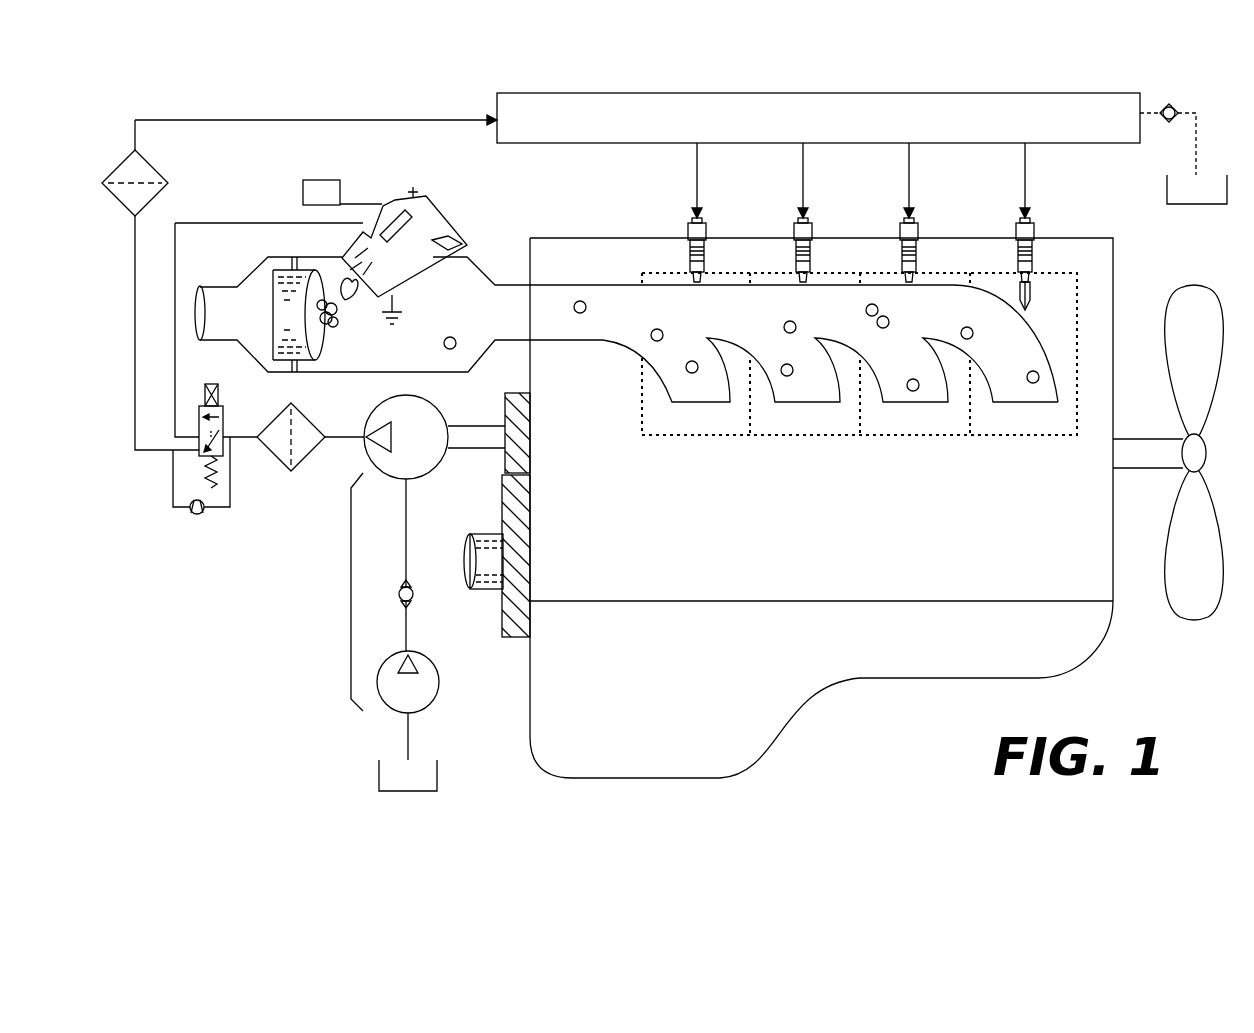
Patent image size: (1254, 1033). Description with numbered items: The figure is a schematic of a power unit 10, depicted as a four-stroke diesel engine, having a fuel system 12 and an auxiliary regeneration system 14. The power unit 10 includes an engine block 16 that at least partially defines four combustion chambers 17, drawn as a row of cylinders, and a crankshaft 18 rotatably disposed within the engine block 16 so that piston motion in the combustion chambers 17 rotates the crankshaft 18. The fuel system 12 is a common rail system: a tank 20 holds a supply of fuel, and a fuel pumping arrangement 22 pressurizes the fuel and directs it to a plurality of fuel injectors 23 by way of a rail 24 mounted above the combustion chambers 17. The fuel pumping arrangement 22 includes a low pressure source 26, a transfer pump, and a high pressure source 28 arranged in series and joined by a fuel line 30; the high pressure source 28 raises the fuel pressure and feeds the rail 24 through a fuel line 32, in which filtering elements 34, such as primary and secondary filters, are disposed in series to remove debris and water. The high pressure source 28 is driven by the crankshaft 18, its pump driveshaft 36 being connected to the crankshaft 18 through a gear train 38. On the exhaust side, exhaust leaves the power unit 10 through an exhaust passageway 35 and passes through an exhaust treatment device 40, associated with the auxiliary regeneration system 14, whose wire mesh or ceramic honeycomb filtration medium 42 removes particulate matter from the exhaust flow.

The power unit 10 is at (765, 43).
The fuel system 12 is at (383, 93).
The auxiliary regeneration system 14 is at (471, 203).
The engine block 16 is at (816, 495).
The combustion chambers 17 is at (692, 436).
The crankshaft 18 is at (492, 590).
The tank 20 is at (379, 763).
The fuel pumping arrangement 22 is at (350, 590).
The fuel injectors 23 is at (788, 234).
The rail 24 is at (810, 129).
The low pressure source 26 is at (397, 702).
The high pressure source 28 is at (410, 448).
The fuel line 30 is at (404, 543).
The fuel line 32 is at (137, 283).
The filtering elements 34 is at (104, 178).
The exhaust passageway 35 is at (500, 285).
The pump driveshaft 36 is at (472, 449).
The gear train 38 is at (503, 520).
The exhaust treatment device 40 is at (350, 354).
The filtration medium 42 is at (272, 303).